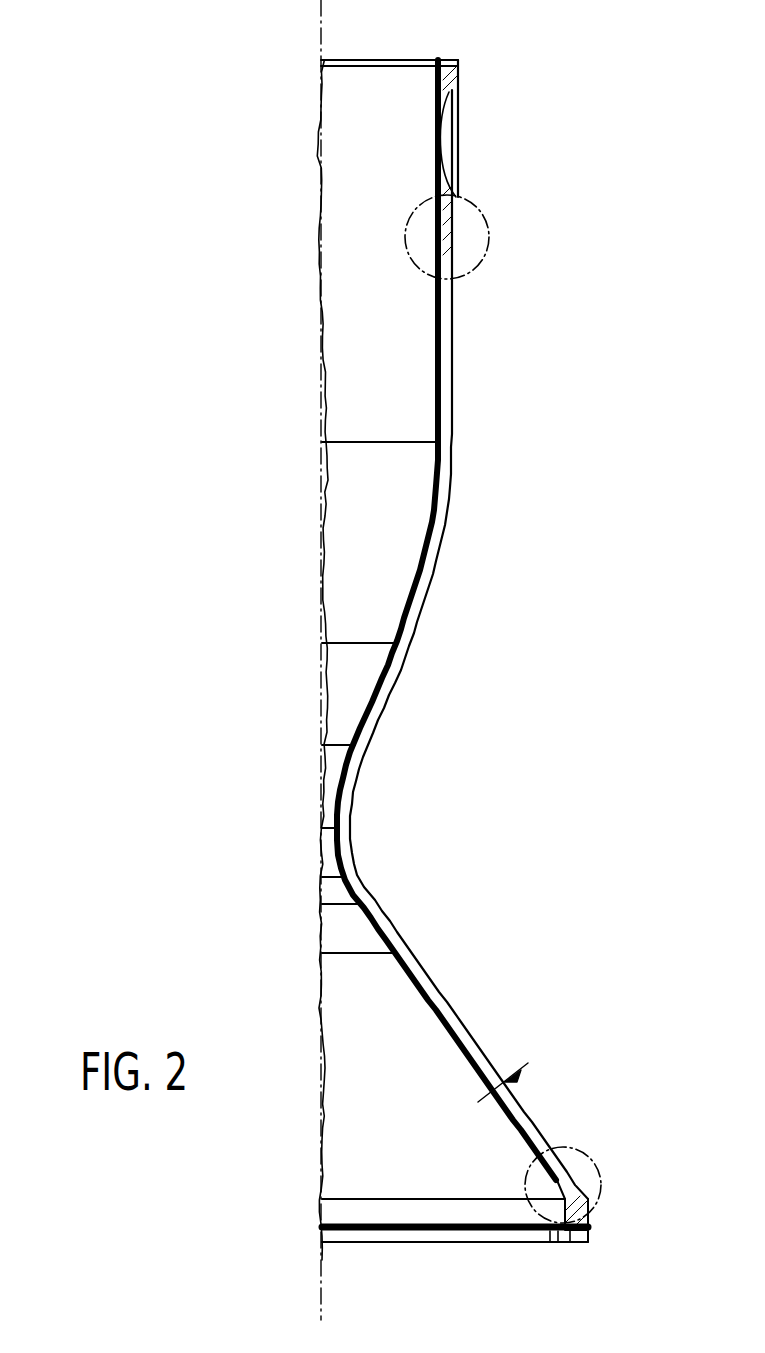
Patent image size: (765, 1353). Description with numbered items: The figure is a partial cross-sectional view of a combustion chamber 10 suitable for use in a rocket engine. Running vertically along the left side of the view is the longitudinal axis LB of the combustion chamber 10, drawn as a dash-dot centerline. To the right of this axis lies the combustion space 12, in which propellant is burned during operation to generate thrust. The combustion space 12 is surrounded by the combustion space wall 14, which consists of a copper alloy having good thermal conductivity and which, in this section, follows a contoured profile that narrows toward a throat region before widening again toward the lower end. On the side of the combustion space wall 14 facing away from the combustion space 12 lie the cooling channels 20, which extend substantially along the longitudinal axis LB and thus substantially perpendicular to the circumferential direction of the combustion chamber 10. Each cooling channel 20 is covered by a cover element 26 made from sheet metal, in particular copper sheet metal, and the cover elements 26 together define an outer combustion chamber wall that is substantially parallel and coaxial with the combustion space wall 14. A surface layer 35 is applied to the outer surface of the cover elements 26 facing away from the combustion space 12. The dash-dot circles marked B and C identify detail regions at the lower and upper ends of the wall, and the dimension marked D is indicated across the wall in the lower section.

The combustion chamber 10 is at (516, 615).
The combustion space 12 is at (324, 363).
The combustion space wall 14 is at (458, 70).
The cooling channel 20 is at (452, 1023).
The cover element 26 is at (453, 393).
The surface layer 35 is at (400, 942).
The detail B is at (603, 1190).
The detail C is at (490, 238).
The wall thickness D is at (525, 1068).
The longitudinal axis of the combustion chamber LB is at (321, 1283).